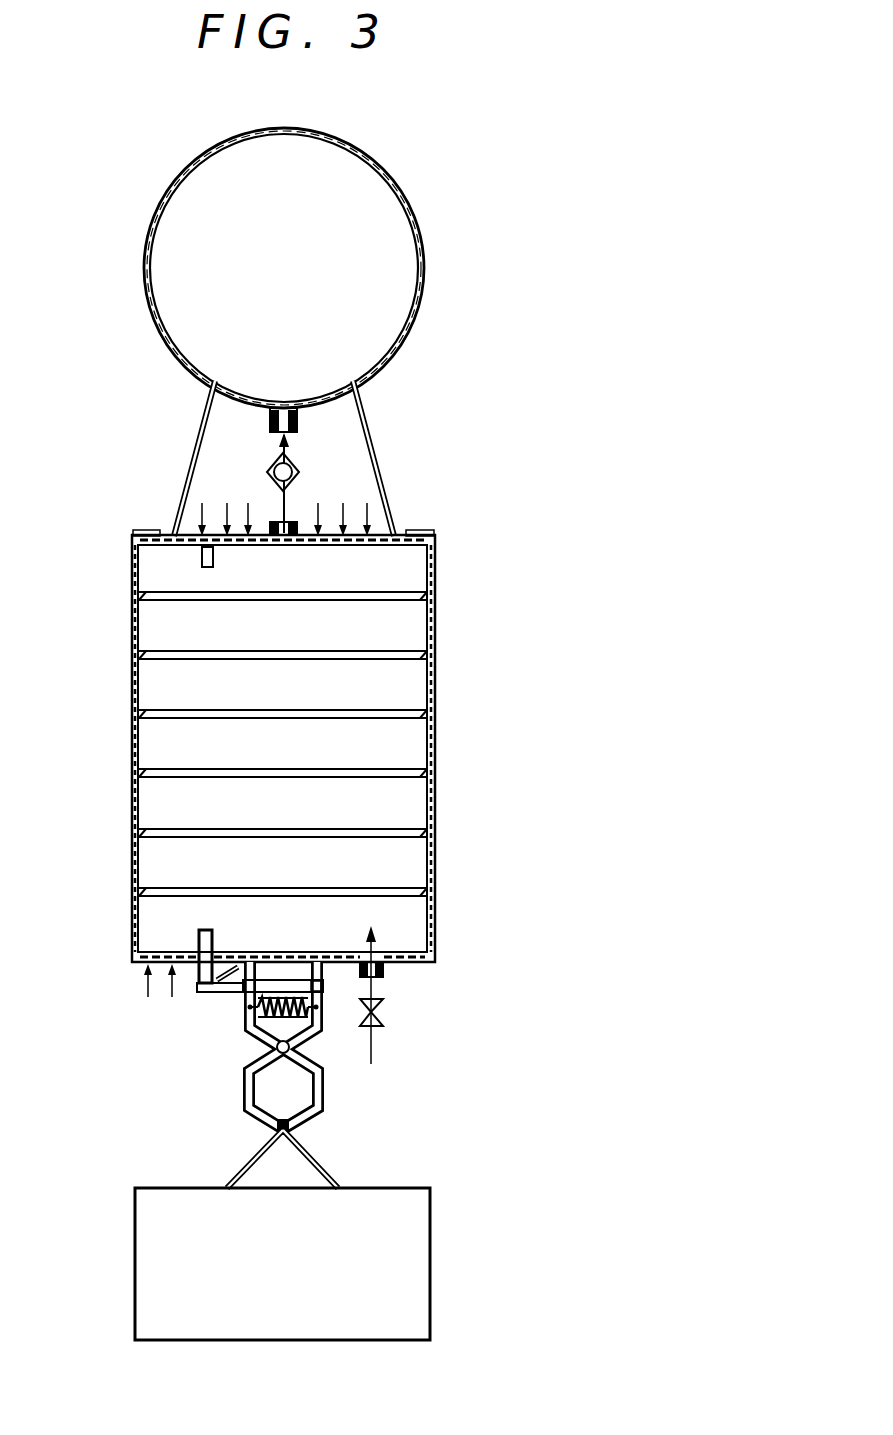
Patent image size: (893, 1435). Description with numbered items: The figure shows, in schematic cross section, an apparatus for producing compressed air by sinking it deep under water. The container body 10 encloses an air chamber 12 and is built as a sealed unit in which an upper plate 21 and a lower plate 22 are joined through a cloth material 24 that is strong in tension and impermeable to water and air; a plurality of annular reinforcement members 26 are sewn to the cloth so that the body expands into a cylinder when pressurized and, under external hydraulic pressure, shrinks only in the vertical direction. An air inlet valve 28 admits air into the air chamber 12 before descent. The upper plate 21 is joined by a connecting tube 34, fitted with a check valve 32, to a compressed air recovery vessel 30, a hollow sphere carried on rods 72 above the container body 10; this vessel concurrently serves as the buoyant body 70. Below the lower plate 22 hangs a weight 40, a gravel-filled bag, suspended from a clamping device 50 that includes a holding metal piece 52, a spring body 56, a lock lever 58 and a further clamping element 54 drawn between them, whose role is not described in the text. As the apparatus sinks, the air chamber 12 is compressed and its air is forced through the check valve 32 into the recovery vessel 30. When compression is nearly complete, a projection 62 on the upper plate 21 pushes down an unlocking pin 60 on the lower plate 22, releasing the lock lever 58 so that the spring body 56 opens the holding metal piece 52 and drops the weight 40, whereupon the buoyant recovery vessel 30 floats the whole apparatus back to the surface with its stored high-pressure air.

The container body 10 is at (440, 566).
The air chamber 12 is at (395, 808).
The upper plate 21 is at (343, 545).
The lower plate 22 is at (305, 954).
The cloth material 24 is at (436, 690).
The annular reinforcement members 26 is at (285, 712).
The air inlet valve 28 is at (384, 1013).
The compressed air recovery vessel 30 is at (418, 230).
The check valve 32 is at (299, 471).
The connecting tube 34 is at (283, 492).
The weight 40 is at (432, 1250).
The clamping device 50 is at (332, 1097).
The holding metal piece 52 is at (244, 1095).
The crossing link arms 54 is at (272, 1050).
The spring body 56 is at (298, 1034).
The lock lever 58 is at (233, 989).
The unlocking pin 60 is at (226, 934).
The projection 62 is at (213, 562).
The buoyant body 70 is at (421, 302).
The rods 72 is at (206, 450).